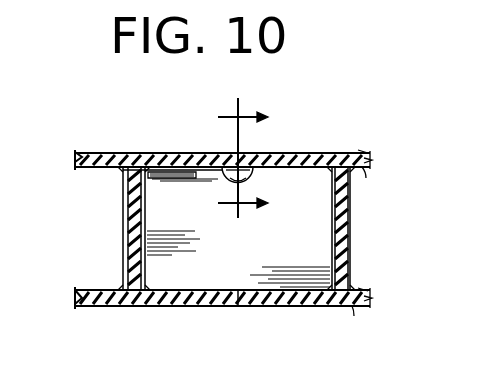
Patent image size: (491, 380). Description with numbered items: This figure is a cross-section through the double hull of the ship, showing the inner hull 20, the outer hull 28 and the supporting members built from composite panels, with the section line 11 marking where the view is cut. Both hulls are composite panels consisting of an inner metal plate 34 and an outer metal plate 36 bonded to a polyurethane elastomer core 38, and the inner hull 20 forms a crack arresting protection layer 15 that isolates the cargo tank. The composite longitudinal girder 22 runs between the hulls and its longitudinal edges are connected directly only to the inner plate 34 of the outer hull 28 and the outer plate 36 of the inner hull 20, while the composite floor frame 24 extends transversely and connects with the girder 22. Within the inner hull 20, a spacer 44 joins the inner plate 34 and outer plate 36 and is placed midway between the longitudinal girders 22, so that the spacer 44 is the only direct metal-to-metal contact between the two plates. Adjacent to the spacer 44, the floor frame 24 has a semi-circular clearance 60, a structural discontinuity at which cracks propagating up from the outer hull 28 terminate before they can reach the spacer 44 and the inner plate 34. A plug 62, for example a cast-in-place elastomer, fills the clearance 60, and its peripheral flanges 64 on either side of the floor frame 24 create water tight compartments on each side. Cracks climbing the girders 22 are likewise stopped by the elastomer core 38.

The section line 11- 11 is at (230, 158).
The crack arresting protection layer 15 is at (122, 152).
The inner hull 20 is at (86, 152).
The composite longitudinal girder 22 is at (352, 234).
The composite floor frame 24 is at (237, 261).
The outer hull 28 is at (112, 308).
The inner plate 34 is at (358, 152).
The outer plate 36 is at (366, 170).
The elastomer core 38 is at (372, 160).
The spacer 44 is at (248, 153).
The semi-circular clearance 60 is at (188, 170).
The plug 62 is at (250, 173).
The peripheral flanges 64 is at (262, 172).